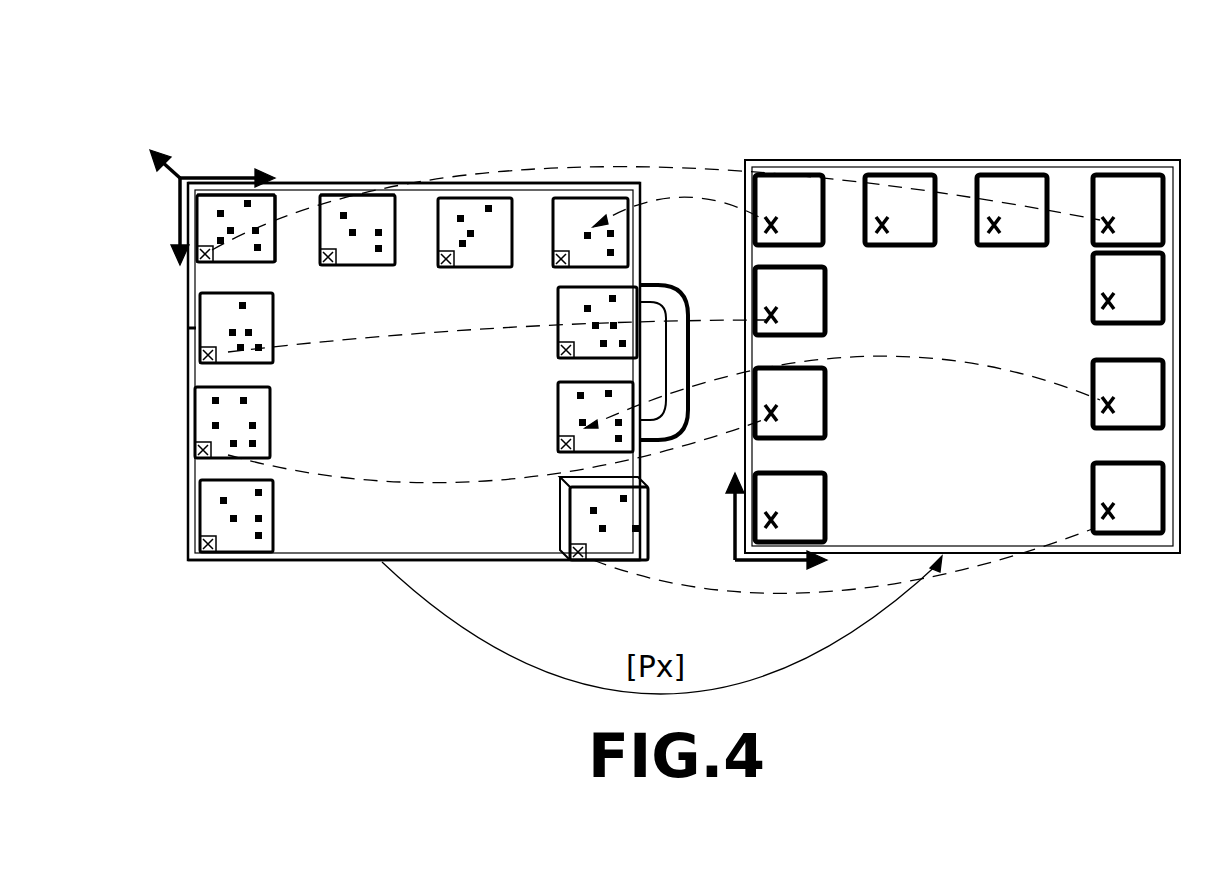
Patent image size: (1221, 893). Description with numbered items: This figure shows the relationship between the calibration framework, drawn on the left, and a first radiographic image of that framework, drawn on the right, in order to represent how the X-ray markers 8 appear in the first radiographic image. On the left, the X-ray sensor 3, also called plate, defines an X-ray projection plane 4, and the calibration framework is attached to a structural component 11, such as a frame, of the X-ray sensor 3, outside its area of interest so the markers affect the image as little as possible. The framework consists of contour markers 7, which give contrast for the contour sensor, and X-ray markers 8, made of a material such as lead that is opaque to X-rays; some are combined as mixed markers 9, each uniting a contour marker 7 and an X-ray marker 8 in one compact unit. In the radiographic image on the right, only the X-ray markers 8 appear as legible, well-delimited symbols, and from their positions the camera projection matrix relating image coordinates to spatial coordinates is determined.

The X-ray sensor 3 is at (212, 280).
The X-ray projection plane 4 is at (540, 185).
The contour marker 7 is at (240, 303).
The X-ray marker 8 is at (328, 250).
The mixed marker 9 is at (268, 194).
The structural component 11 is at (285, 570).